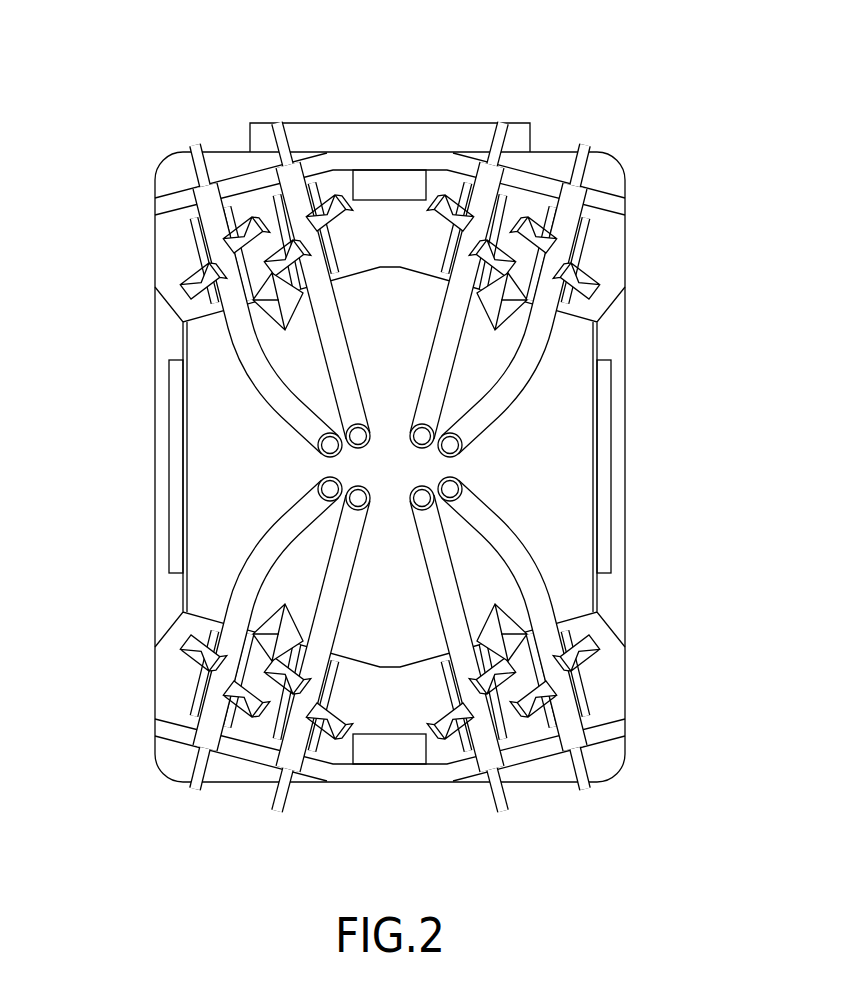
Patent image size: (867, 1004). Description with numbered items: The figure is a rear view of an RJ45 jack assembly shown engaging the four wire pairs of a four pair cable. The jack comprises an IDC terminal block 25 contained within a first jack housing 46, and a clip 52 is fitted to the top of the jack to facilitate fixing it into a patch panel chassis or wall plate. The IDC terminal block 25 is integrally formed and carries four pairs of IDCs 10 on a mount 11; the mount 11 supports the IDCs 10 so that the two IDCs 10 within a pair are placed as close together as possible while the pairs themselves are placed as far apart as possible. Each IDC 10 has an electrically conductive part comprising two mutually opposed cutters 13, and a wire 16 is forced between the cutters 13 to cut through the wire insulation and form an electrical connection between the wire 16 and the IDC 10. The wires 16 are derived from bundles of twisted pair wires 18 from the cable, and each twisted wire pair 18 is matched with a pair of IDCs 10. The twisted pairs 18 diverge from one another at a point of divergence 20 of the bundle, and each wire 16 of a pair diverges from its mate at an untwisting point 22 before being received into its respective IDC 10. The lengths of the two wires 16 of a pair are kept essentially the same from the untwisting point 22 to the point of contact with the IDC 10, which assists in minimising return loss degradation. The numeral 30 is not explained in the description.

The insulation displacement contact 10 is at (598, 703).
The mount 11 is at (542, 460).
The cutters 13 is at (597, 653).
The wire 16 is at (512, 538).
The twisted wire pair 18 is at (280, 413).
The point of divergence 20 is at (483, 410).
The untwisting point 22 is at (322, 423).
The IDC terminal block 25 is at (567, 363).
The nozzle block 30 is at (272, 302).
The first jack housing 46 is at (163, 598).
The clip 52 is at (392, 133).